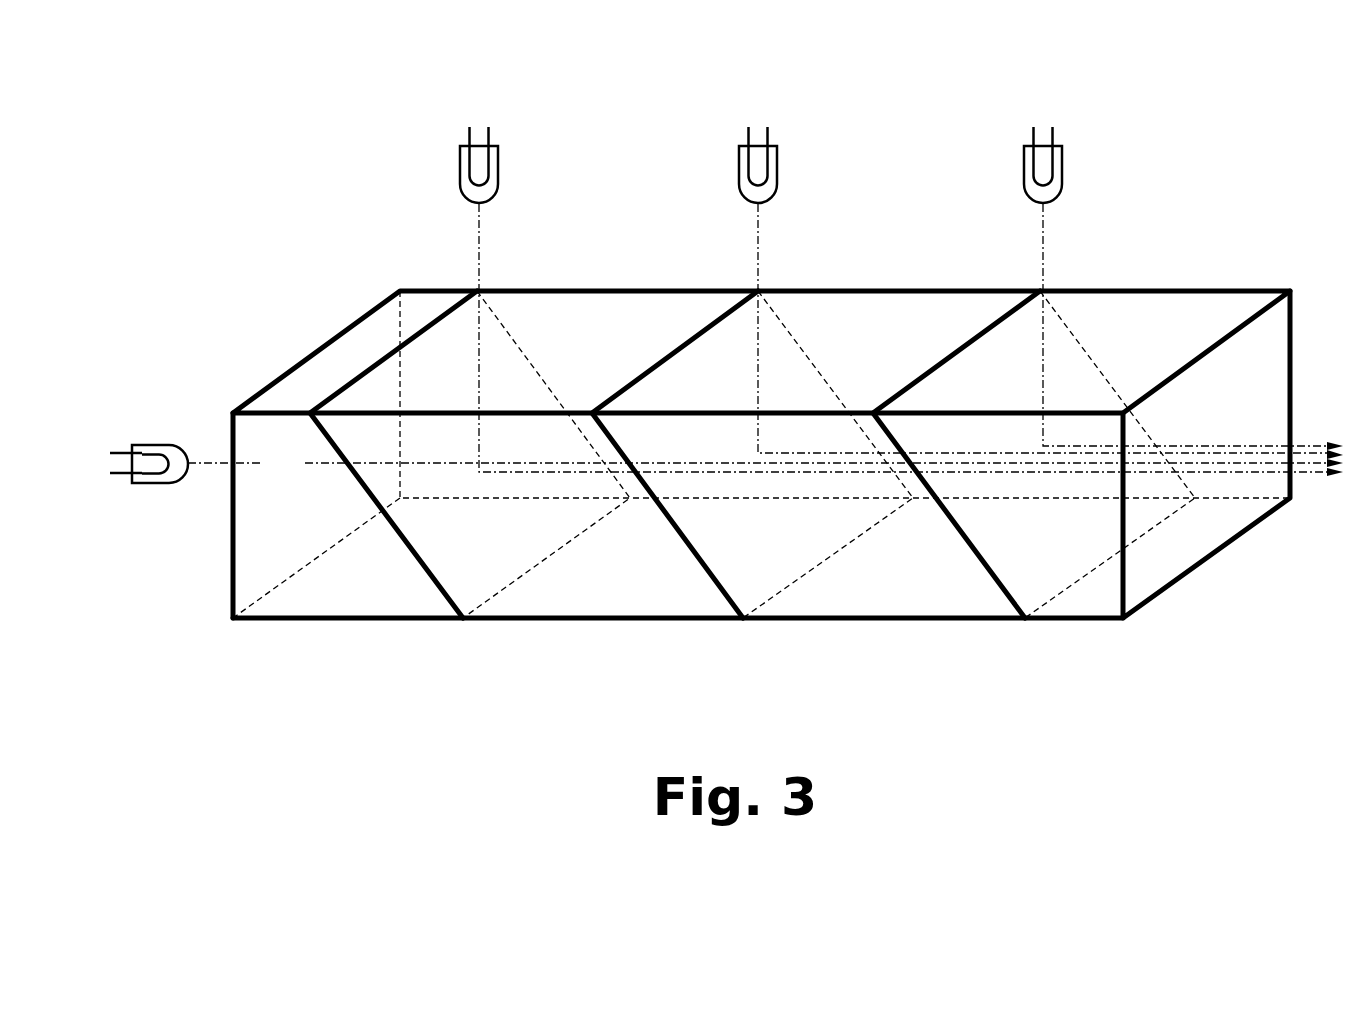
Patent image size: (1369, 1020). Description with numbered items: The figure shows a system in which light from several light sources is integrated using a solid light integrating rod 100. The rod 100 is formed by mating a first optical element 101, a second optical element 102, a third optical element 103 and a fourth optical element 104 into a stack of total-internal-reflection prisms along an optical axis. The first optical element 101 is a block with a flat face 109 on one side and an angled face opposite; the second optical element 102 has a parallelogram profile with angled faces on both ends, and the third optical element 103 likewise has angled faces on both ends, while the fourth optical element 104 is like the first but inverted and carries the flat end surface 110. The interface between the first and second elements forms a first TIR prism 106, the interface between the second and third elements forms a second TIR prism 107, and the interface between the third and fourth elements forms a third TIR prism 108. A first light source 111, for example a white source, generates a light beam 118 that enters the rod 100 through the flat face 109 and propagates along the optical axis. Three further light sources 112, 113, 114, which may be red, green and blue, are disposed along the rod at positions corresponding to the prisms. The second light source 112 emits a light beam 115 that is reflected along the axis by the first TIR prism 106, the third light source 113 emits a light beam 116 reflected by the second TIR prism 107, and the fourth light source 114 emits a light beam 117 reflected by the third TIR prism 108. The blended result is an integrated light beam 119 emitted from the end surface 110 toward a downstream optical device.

The light integrating rod 100 is at (318, 255).
The first optical element 101 is at (348, 602).
The second optical element 102 is at (607, 593).
The third optical element 103 is at (872, 593).
The fourth optical element 104 is at (1095, 603).
The first TIR prism 106 is at (433, 588).
The second TIR prism 107 is at (715, 588).
The third TIR prism 108 is at (992, 578).
The flat face 109 is at (230, 568).
The end surface 110 is at (1180, 552).
The first light source 111 is at (152, 485).
The second light source 112 is at (498, 175).
The third light source 113 is at (777, 175).
The fourth light source 114 is at (1063, 175).
The light beam 115 is at (895, 338).
The light beam 116 is at (1035, 328).
The light beam 117 is at (1177, 325).
The light beam 118 is at (757, 462).
The integrated light beam 119 is at (1310, 447).